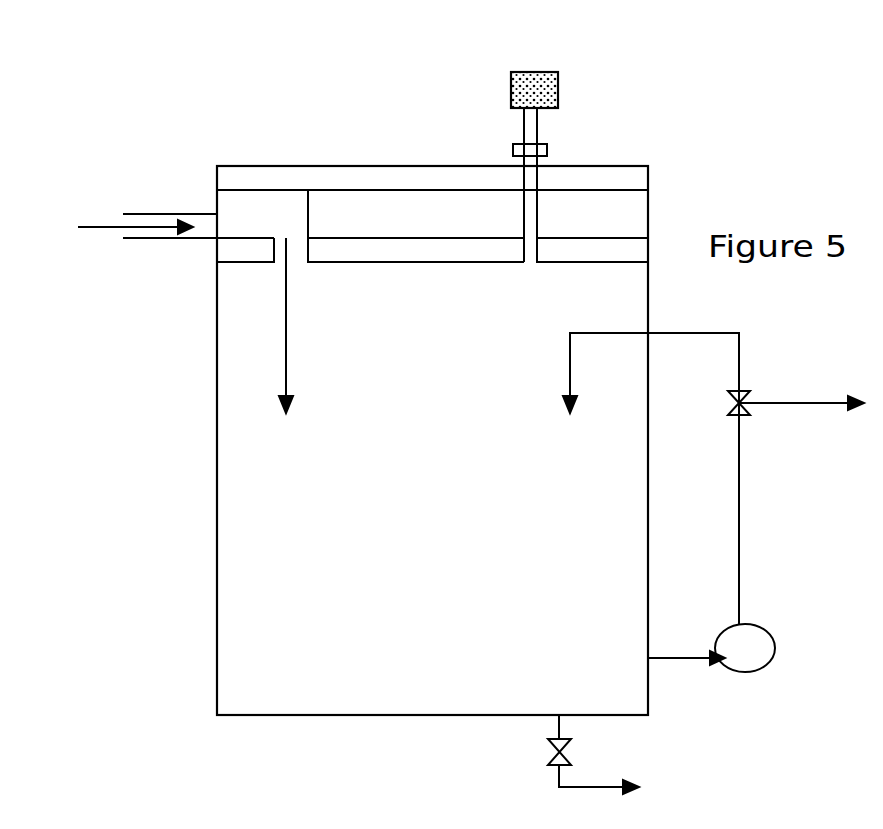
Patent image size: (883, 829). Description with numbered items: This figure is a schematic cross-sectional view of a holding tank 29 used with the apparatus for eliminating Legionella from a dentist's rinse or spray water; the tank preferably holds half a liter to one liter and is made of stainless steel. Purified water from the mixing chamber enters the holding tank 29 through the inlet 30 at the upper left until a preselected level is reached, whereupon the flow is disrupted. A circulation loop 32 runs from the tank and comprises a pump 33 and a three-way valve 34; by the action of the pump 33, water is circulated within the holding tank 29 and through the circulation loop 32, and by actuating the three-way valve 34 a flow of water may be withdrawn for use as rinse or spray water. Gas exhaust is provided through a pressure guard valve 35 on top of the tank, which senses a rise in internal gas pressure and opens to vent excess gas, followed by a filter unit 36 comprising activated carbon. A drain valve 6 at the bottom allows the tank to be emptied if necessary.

The holding tank 29 is at (317, 166).
The inlet 30 is at (165, 214).
The circulation loop 32 is at (671, 478).
The pump 33 is at (731, 648).
The three-way valve 34 is at (796, 392).
The pressure guard valve 35 is at (550, 156).
The filter unit 36 is at (543, 155).
The drain valve 6 is at (584, 754).